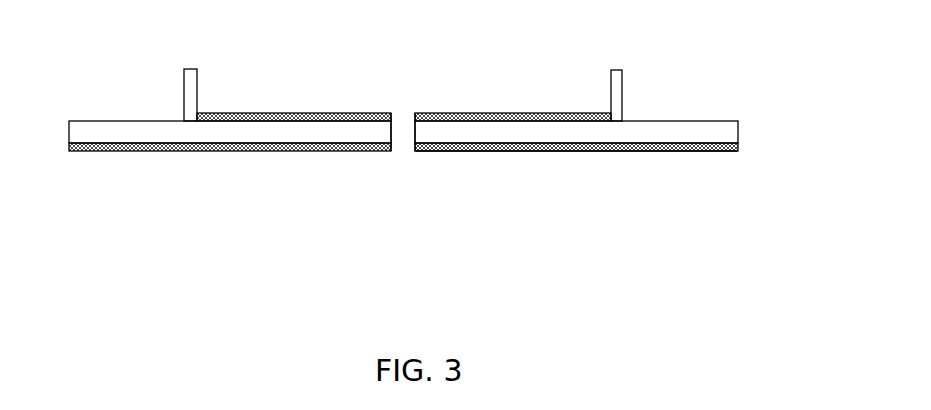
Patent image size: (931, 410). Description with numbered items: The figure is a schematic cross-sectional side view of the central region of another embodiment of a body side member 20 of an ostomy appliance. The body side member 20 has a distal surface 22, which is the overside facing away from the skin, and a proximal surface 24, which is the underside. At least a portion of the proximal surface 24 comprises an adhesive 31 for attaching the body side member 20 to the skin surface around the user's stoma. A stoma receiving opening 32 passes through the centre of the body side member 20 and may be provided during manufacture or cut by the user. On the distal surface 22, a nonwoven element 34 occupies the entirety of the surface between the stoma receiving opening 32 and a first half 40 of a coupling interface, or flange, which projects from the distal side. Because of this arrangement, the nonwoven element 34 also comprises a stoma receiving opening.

The body side member 20 is at (437, 118).
The distal surface 22 is at (738, 130).
The proximal surface 24 is at (711, 160).
The adhesive 31 is at (581, 161).
The stoma receiving opening 32 is at (404, 163).
The nonwoven element 34 is at (543, 102).
The first half of a coupling interface 40 is at (621, 75).